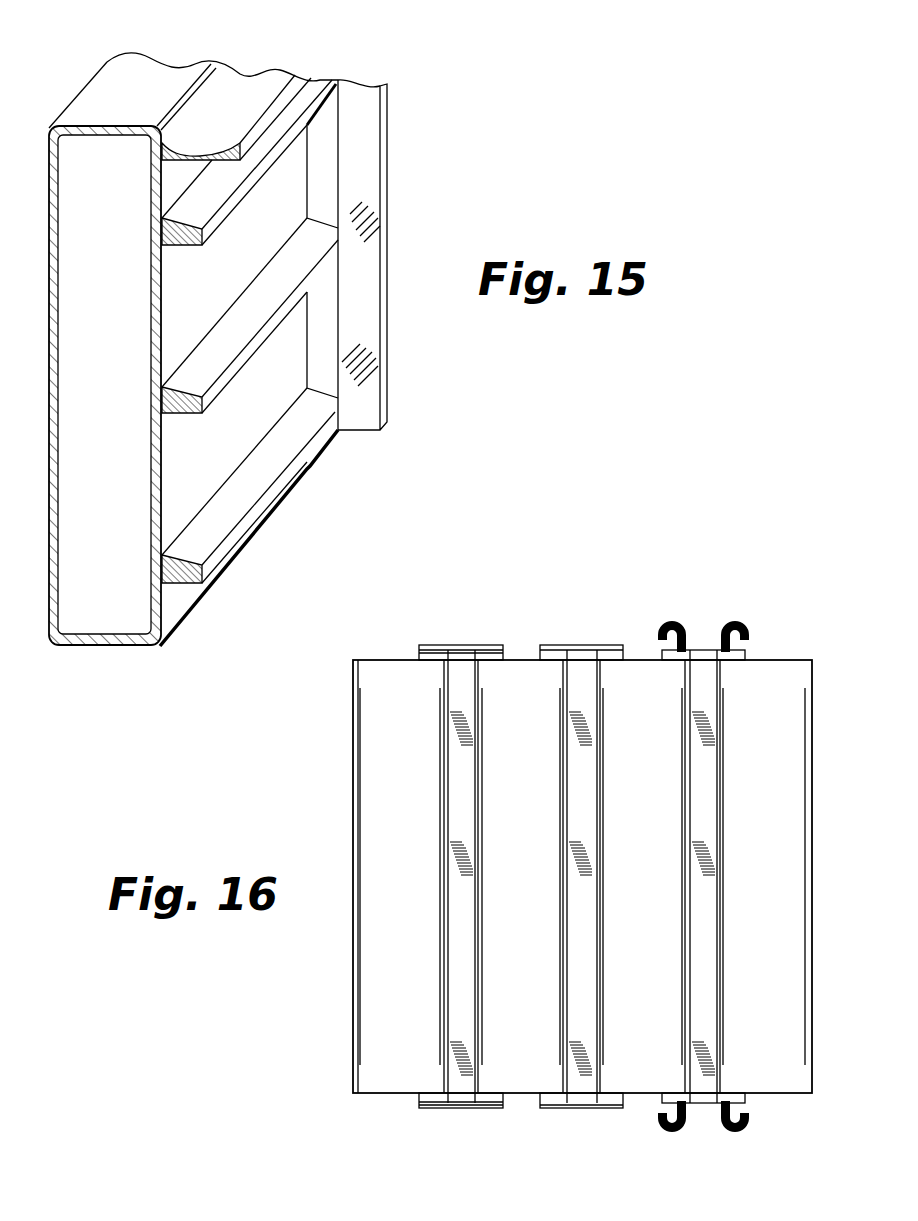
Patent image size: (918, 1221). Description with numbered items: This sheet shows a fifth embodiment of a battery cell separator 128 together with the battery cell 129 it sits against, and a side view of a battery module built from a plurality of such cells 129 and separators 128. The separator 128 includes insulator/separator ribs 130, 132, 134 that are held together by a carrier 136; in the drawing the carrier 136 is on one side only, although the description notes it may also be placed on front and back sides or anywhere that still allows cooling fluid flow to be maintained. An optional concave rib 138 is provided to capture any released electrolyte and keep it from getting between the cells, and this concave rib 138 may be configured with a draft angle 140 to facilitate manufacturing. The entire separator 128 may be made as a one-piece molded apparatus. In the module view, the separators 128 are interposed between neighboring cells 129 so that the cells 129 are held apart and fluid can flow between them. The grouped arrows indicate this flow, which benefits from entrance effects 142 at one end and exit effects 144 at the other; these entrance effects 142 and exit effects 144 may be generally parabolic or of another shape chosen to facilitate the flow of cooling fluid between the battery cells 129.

In FIG. 15, the battery cell separator 128 is at (458, 88).
In FIG. 16, the battery cell separator 128 is at (458, 978).
In FIG. 15, the battery cell 129 is at (110, 608).
In FIG. 16, the battery cell 129 is at (404, 878).
In FIG. 15, the insulator/separator rib 130 is at (243, 205).
In FIG. 15, the insulator/separator rib 132 is at (243, 370).
In FIG. 15, the insulator/separator rib 134 is at (322, 445).
In FIG. 15, the carrier 136 is at (355, 152).
In FIG. 16, the carrier 136 is at (488, 644).
In FIG. 15, the concave rib 138 is at (233, 106).
In FIG. 15, the draft angle 140 is at (205, 190).
In FIG. 16, the entrance effects 142 is at (750, 628).
In FIG. 16, the exit effects 144 is at (737, 1136).